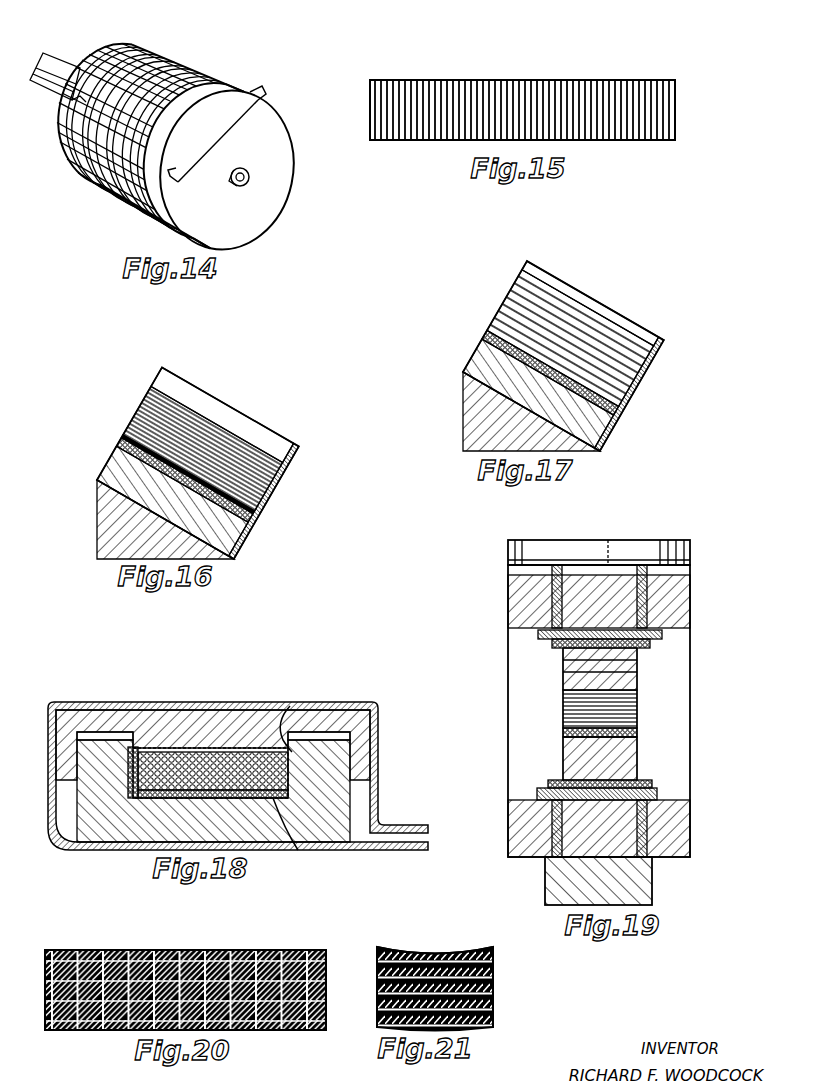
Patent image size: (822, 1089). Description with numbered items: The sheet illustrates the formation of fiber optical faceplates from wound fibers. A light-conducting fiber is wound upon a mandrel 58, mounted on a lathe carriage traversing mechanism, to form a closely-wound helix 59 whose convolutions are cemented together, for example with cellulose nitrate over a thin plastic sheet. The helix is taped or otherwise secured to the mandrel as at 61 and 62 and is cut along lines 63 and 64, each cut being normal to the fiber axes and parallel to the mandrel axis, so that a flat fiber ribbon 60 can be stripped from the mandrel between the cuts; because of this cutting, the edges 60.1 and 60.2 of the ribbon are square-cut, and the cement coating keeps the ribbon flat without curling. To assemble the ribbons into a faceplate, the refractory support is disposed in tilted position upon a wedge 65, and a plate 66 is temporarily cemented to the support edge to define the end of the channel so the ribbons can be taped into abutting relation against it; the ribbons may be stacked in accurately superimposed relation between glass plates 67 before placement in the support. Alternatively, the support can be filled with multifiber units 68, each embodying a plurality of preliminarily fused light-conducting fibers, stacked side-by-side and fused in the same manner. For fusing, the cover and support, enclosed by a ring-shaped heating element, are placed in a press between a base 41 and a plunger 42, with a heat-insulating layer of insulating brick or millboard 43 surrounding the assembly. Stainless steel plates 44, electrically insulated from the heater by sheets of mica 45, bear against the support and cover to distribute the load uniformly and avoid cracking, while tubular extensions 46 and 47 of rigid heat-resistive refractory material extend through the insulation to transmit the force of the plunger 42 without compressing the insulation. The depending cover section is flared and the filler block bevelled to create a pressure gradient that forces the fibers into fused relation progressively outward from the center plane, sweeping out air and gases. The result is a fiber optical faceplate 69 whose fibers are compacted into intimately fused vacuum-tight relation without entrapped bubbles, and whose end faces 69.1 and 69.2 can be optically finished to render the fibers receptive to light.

In FIG. 14, the mandrel 58 is at (277, 123).
In FIG. 14, the helix 59 is at (187, 57).
In FIG. 14, the tape securing point 61 is at (86, 100).
In FIG. 14, the tape securing point 62 is at (72, 143).
In FIG. 14, the cut line 63 is at (82, 100).
In FIG. 14, the cut line 64 is at (72, 107).
In FIG. 15, the fiber ribbon 60 is at (428, 100).
In FIG. 16, the fiber ribbon 60 is at (195, 438).
In FIG. 15, the ribbon edge 60.1 is at (532, 80).
In FIG. 15, the ribbon edge 60.2 is at (476, 140).
In FIG. 16, the wedge 65 is at (107, 513).
In FIG. 17, the wedge 65 is at (473, 410).
In FIG. 16, the glass plate 67 is at (153, 432).
In FIG. 18, the glass plate 67 is at (290, 706).
In FIG. 16, the plate 66 is at (290, 460).
In FIG. 17, the plate 66 is at (650, 368).
In FIG. 17, the multifiber unit 68 is at (567, 315).
In FIG. 19, the plunger 42 is at (580, 540).
In FIG. 19, the insulating brick 43 is at (508, 585).
In FIG. 19, the tubular extension 47 is at (643, 590).
In FIG. 19, the stainless steel plate 44 is at (650, 632).
In FIG. 19, the mica sheet 45 is at (650, 785).
In FIG. 19, the tubular extension 46 is at (643, 837).
In FIG. 19, the base 41 is at (637, 880).
In FIG. 20, the fiber optical faceplate 69 is at (136, 948).
In FIG. 21, the fiber optical faceplate 69 is at (438, 953).
In FIG. 21, the end face 69.1 is at (376, 970).
In FIG. 21, the end face 69.2 is at (497, 976).